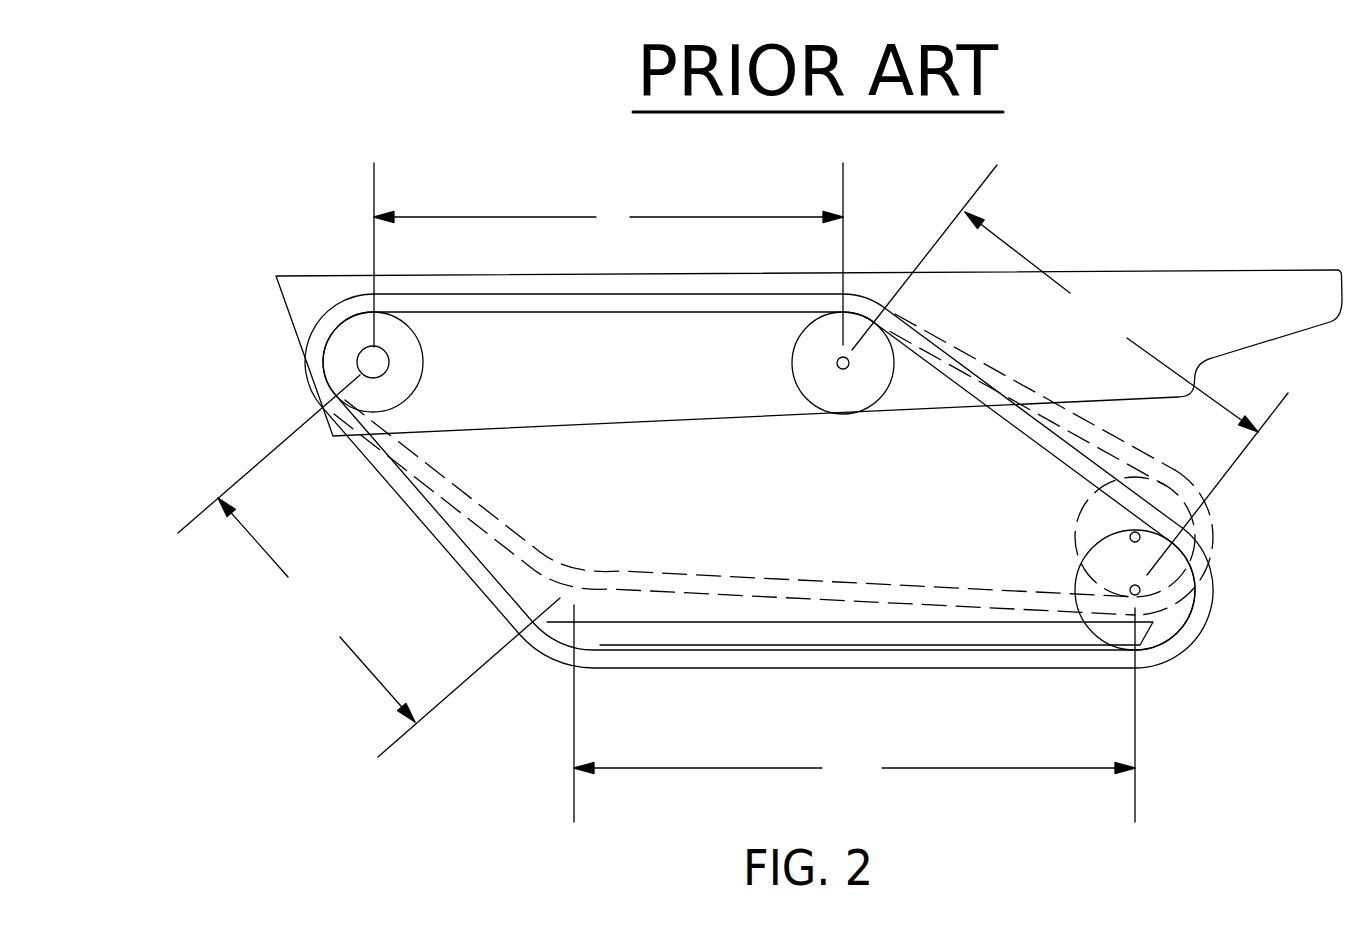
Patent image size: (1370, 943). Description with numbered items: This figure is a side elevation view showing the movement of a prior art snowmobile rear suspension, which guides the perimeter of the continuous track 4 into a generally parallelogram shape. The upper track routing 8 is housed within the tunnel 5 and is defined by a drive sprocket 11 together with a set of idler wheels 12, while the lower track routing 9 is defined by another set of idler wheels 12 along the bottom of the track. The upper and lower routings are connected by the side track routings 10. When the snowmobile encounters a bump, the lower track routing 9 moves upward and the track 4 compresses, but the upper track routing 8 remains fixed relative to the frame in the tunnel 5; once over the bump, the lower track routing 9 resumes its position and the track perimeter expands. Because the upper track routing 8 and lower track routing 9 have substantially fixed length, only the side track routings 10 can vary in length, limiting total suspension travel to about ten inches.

The track 4 is at (1202, 643).
The tunnel 5 is at (1178, 303).
The upper track routing 8 is at (608, 255).
The lower track routing 9 is at (854, 713).
The side track routings 10 is at (733, 461).
The drive sprocket 11 is at (347, 362).
The idler wheels 12 is at (815, 366).